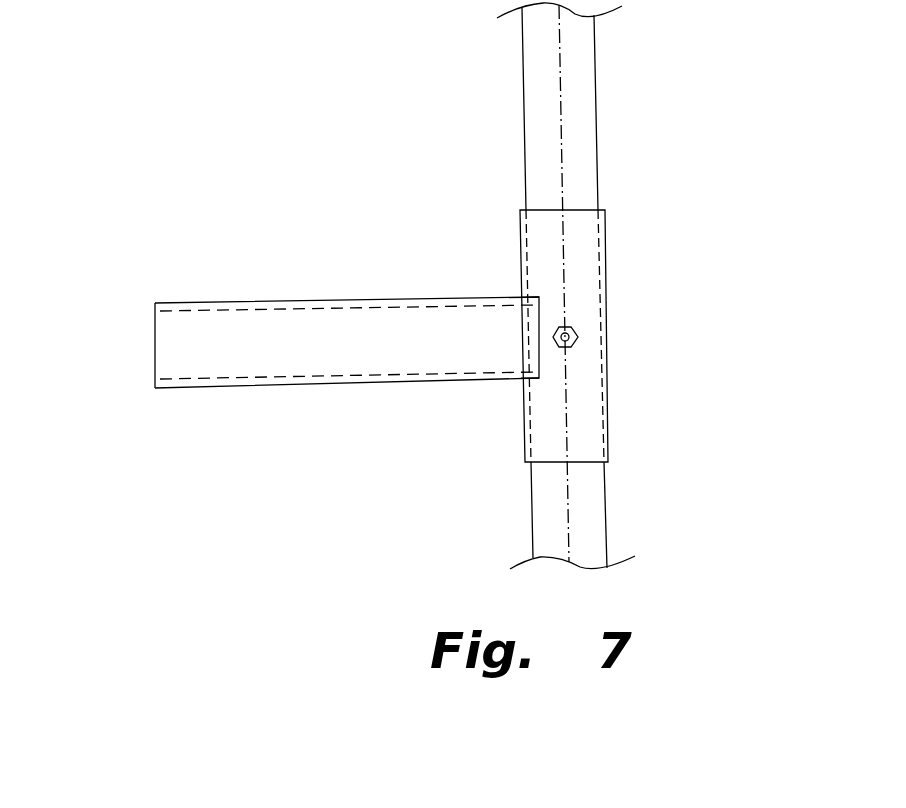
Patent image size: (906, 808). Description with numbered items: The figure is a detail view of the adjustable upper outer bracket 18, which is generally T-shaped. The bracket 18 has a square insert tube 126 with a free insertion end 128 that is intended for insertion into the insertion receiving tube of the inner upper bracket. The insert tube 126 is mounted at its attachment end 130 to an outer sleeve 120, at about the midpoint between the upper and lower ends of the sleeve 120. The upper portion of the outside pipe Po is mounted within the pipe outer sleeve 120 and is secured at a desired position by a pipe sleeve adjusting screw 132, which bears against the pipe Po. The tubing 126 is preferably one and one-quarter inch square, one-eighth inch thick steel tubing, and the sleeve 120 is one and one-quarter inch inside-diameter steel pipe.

The outside pipe Po is at (612, 115).
The adjustable upper outer bracket 18 is at (385, 326).
The outer sleeve 120 is at (607, 423).
The square insert tube 126 is at (220, 302).
The free insertion end 128 is at (155, 334).
The attachment end 130 is at (530, 336).
The pipe sleeve adjusting screw 132 is at (578, 337).